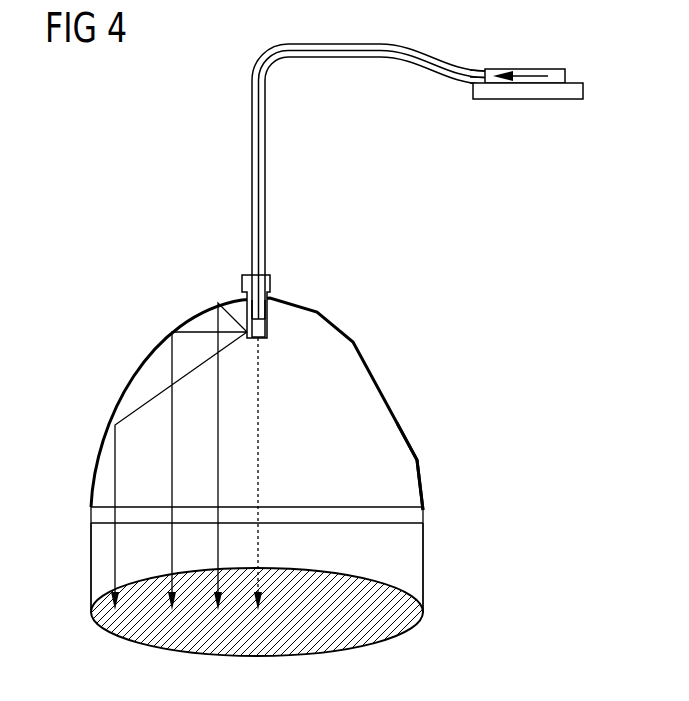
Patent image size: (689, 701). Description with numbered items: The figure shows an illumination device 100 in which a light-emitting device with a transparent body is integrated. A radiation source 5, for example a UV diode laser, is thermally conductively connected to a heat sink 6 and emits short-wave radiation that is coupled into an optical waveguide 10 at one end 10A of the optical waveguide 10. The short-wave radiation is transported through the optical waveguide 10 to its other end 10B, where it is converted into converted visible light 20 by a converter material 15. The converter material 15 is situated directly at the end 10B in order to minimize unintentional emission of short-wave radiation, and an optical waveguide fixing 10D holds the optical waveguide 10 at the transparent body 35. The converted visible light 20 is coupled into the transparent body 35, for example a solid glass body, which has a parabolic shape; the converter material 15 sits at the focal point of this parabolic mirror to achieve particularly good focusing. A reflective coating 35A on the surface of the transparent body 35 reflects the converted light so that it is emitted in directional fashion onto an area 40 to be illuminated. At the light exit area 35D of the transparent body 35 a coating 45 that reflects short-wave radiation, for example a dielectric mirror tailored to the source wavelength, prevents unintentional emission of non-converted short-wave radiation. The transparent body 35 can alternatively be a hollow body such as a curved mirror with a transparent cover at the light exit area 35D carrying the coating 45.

The illumination device 100 is at (132, 138).
The optical waveguide 10 is at (337, 58).
The end of the optical waveguide 10A is at (481, 70).
The second end of the optical waveguide 10B is at (252, 312).
The optical waveguide fixing 10D is at (270, 284).
The radiation source 5 is at (553, 69).
The heat sink 6 is at (518, 100).
The converter material 15 is at (268, 327).
The transparent body 35 is at (387, 425).
The reflective coating 35A is at (420, 472).
The light exit area 35D is at (350, 527).
The coating that reflects short-wave radiation 45 is at (413, 515).
The converted visible light 20 is at (113, 563).
The area to be illuminated 40 is at (397, 618).